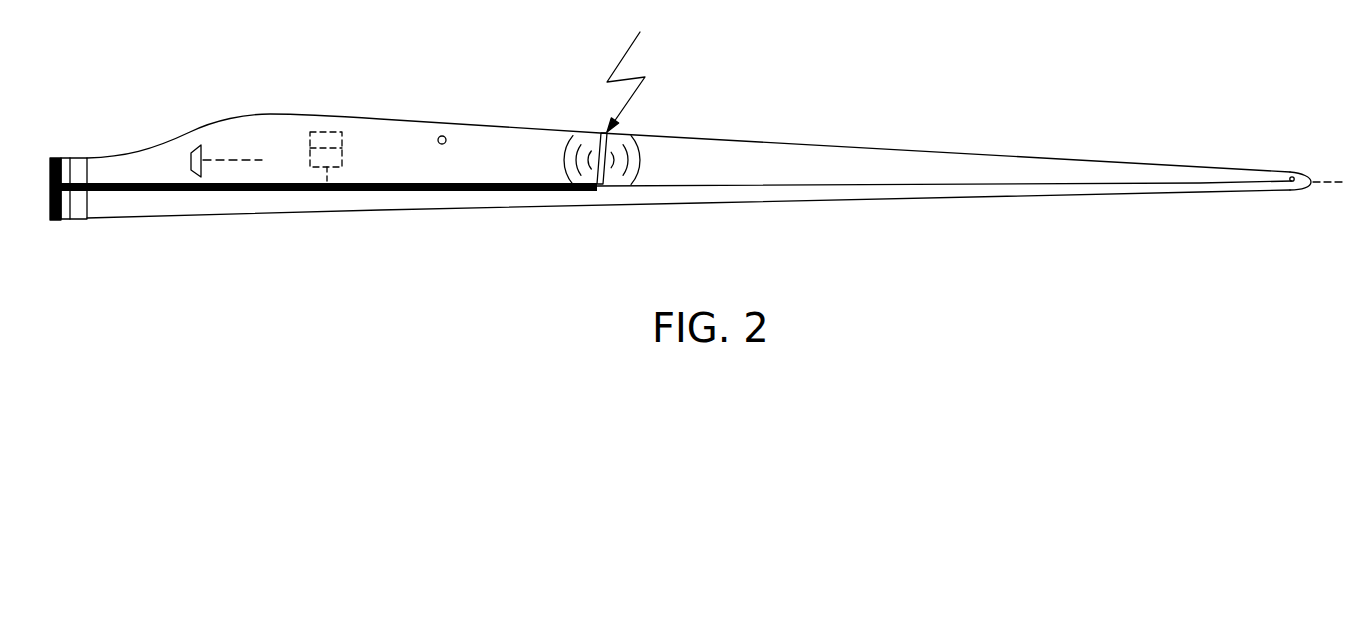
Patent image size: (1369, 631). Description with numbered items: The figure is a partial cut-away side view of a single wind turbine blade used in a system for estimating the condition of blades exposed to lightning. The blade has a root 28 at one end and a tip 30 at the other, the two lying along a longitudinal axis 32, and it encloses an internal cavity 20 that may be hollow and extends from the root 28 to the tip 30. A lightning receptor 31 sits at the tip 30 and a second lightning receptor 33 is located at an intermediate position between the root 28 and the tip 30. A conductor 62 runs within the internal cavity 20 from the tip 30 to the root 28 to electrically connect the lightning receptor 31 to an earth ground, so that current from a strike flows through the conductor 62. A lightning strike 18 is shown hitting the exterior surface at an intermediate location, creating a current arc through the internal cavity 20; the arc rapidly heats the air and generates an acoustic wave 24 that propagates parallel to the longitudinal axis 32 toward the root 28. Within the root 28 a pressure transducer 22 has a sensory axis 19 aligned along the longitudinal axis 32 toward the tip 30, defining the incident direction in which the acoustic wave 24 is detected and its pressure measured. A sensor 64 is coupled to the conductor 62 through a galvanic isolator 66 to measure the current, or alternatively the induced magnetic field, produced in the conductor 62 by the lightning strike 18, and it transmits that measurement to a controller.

The lightning strike 18 is at (628, 48).
The sensory axis 19 is at (223, 160).
The internal cavity 20 is at (248, 205).
The pressure transducer 22 is at (197, 147).
The acoustic wave 24 is at (558, 160).
The root 28 is at (97, 158).
The tip 30 is at (1267, 168).
The lightning receptor 31 is at (1293, 177).
The longitudinal axis 32 is at (1335, 185).
The lightning receptor 33 is at (443, 136).
The conductor 62 is at (435, 192).
The sensor 64 is at (343, 137).
The galvanic isolator 66 is at (342, 159).